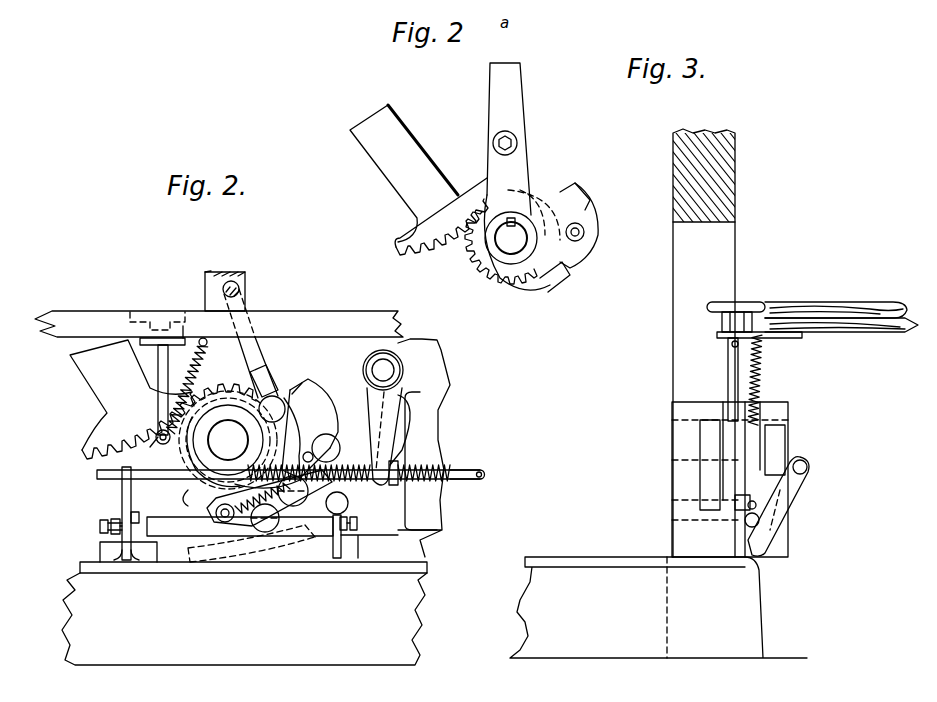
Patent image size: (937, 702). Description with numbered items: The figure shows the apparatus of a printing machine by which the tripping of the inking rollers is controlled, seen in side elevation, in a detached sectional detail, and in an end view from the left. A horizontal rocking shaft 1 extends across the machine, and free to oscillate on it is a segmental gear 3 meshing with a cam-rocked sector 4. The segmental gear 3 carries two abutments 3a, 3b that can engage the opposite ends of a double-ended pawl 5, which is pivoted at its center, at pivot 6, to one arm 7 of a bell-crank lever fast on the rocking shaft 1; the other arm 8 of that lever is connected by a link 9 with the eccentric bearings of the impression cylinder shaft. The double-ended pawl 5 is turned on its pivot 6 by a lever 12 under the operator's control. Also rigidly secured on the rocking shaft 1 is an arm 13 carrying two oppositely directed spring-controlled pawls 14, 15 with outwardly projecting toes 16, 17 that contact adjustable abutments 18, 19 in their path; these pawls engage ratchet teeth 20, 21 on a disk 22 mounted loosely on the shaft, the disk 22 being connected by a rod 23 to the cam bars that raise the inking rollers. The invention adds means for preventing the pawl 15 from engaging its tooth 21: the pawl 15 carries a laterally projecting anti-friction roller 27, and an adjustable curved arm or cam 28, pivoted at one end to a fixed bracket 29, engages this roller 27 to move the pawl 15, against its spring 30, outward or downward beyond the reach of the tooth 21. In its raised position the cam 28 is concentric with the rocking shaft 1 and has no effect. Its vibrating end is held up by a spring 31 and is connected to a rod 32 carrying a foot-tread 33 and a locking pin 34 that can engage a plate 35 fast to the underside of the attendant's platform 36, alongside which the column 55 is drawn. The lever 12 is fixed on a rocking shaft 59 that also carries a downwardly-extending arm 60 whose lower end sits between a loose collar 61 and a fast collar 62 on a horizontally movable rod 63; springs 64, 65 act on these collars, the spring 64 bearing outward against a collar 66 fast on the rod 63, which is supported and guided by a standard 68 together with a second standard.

In FIG. 2, the rocking shaft 1 is at (228, 436).
In FIG. 2A, the rocking shaft 1 is at (511, 236).
In FIG. 2, the segmental gear 3 is at (270, 372).
In FIG. 2A, the segmental gear 3 is at (488, 272).
In FIG. 2A, the abutment 3a is at (535, 195).
In FIG. 2A, the abutment 3b is at (545, 286).
In FIG. 2, the cam-rocked sector 4 is at (82, 452).
In FIG. 2A, the cam-rocked sector 4 is at (425, 254).
In FIG. 2, the double-ended pawl 5 is at (318, 396).
In FIG. 2A, the double-ended pawl 5 is at (597, 221).
In FIG. 2, the pivot 6 is at (337, 444).
In FIG. 2A, the pivot 6 is at (586, 238).
In FIG. 2, the arm of bell-crank lever 7 is at (296, 435).
In FIG. 2A, the arm of bell-crank lever 7 is at (578, 191).
In FIG. 2, the arm of bell-crank lever 8 is at (255, 366).
In FIG. 2A, the arm of bell-crank lever 8 is at (493, 150).
In FIG. 2, the link 9 is at (245, 278).
In FIG. 2A, the link 9 is at (522, 106).
In FIG. 2, the lever 12 is at (403, 420).
In FIG. 2, the arm 13 is at (292, 535).
In FIG. 2, the spring-controlled pawl 14 is at (322, 428).
In FIG. 2, the spring-controlled pawl 15 is at (216, 517).
In FIG. 3, the spring-controlled pawl 15 is at (758, 508).
In FIG. 2, the toe 16 is at (332, 555).
In FIG. 2, the toe 17 is at (290, 515).
In FIG. 2, the adjustable abutment 18 is at (358, 523).
In FIG. 2, the adjustable abutment 19 is at (131, 515).
In FIG. 3, the adjustable abutment 19 is at (760, 525).
In FIG. 2, the ratchet tooth 20 is at (296, 470).
In FIG. 2, the ratchet tooth 21 is at (185, 498).
In FIG. 2, the disk 22 is at (156, 447).
In FIG. 3, the disk 22 is at (805, 478).
In FIG. 2, the rod 23 is at (243, 303).
In FIG. 2, the anti-friction roller 27 is at (228, 522).
In FIG. 3, the anti-friction roller 27 is at (735, 502).
In FIG. 2, the curved arm or cam 28 is at (186, 503).
In FIG. 3, the curved arm or cam 28 is at (785, 448).
In FIG. 3, the fixed bracket 29 is at (705, 473).
In FIG. 2, the spring 30 is at (236, 522).
In FIG. 3, the spring 30 is at (795, 500).
In FIG. 2, the spring 31 is at (200, 349).
In FIG. 3, the spring 31 is at (762, 385).
In FIG. 2, the rod 32 is at (158, 365).
In FIG. 3, the rod 32 is at (740, 357).
In FIG. 2, the foot-tread 33 is at (170, 311).
In FIG. 3, the foot-tread 33 is at (752, 305).
In FIG. 2, the locking pin 34 is at (182, 338).
In FIG. 2, the plate 35 is at (140, 341).
In FIG. 3, the plate 35 is at (717, 335).
In FIG. 2, the platform 36 is at (219, 324).
In FIG. 3, the platform 36 is at (845, 306).
In FIG. 3, the column 55 is at (707, 343).
In FIG. 2, the rocking shaft 59 is at (374, 364).
In FIG. 2, the downwardly-extending arm 60 is at (383, 408).
In FIG. 2, the collar 61 is at (309, 462).
In FIG. 2, the collar 62 is at (430, 456).
In FIG. 2, the rod 63 is at (472, 467).
In FIG. 3, the rod 63 is at (808, 467).
In FIG. 2, the spring 64 is at (378, 487).
In FIG. 2, the spring 65 is at (446, 481).
In FIG. 2, the collar 66 is at (172, 446).
In FIG. 2, the standard 68 is at (122, 488).